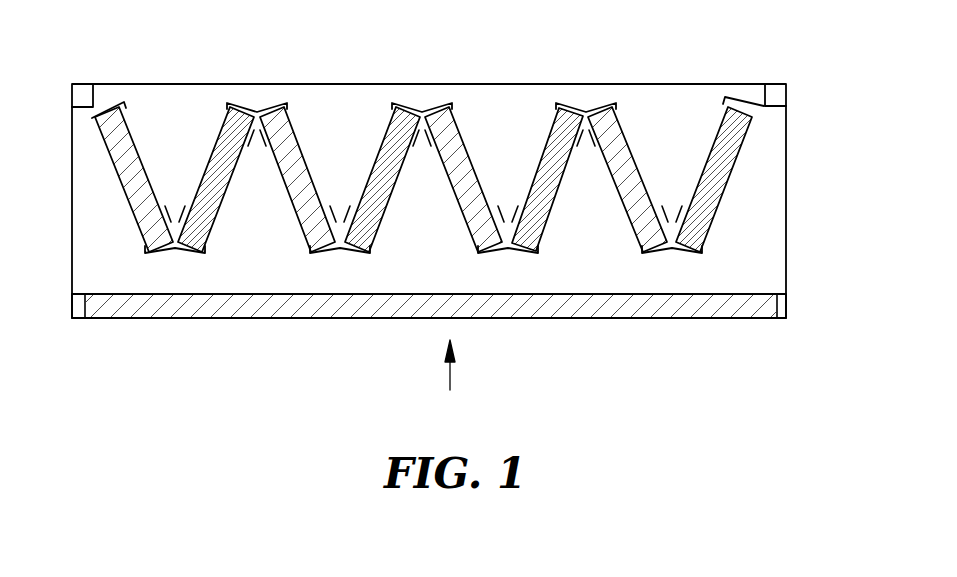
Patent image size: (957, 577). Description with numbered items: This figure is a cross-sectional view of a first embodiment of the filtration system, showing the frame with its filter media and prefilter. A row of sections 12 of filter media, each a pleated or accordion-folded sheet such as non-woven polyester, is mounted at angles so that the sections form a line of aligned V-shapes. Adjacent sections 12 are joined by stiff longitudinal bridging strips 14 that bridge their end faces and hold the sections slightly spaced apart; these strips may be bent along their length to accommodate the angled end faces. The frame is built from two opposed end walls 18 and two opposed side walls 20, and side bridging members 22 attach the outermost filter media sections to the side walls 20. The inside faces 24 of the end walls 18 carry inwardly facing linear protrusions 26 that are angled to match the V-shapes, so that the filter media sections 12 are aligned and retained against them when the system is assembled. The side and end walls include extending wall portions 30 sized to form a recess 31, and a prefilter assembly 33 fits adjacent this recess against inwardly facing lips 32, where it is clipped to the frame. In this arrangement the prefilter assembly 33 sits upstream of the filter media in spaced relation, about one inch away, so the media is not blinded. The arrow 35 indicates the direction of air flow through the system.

The sections of filter media 12 is at (130, 136).
The bridging strips 14 is at (580, 105).
The end walls 18 is at (758, 193).
The side walls 20 is at (72, 208).
The side bridging members 22 is at (112, 100).
The inside faces 24 is at (686, 110).
The linear protrusions 26 is at (179, 228).
The extending wall portions 30 is at (668, 270).
The recess 31 is at (520, 268).
The inwardly facing lips 32 is at (745, 293).
The prefilter assembly 33 is at (210, 313).
The arrow 35 is at (452, 372).